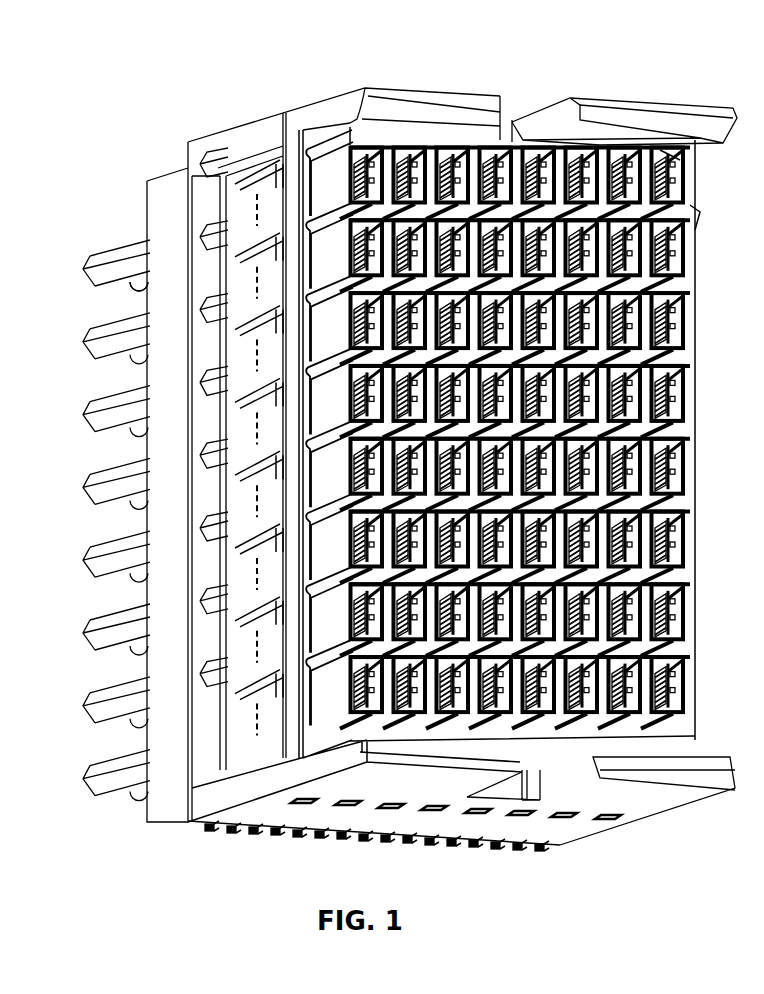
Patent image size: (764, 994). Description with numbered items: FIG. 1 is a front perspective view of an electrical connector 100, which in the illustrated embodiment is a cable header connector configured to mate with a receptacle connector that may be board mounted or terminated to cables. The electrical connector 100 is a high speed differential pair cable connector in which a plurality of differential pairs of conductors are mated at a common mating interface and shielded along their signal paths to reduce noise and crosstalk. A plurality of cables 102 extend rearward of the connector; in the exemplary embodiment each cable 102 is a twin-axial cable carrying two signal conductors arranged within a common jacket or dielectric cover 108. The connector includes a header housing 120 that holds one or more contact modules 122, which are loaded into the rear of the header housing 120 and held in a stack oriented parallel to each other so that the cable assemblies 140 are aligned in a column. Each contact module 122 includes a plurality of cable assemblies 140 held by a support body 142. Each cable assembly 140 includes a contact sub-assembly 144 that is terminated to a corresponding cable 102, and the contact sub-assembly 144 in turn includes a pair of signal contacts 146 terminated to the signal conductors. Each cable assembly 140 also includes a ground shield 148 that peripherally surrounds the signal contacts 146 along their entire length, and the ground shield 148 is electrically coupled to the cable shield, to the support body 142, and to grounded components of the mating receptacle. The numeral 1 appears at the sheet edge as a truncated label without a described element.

The electrical connector 100 is at (517, 63).
The cable 102 is at (106, 250).
The dielectric cover 108 is at (101, 275).
The header housing 120 is at (287, 128).
The contact module 122 is at (148, 825).
The cable assembly 140 is at (688, 394).
The support body 142 is at (209, 712).
The contact sub-assembly 144 is at (690, 628).
The signal contact 146 is at (655, 160).
The ground shield 148 is at (590, 140).
The truncated reference numeral 1 is at (757, 496).